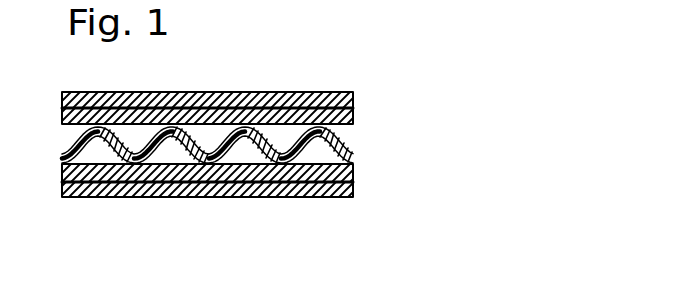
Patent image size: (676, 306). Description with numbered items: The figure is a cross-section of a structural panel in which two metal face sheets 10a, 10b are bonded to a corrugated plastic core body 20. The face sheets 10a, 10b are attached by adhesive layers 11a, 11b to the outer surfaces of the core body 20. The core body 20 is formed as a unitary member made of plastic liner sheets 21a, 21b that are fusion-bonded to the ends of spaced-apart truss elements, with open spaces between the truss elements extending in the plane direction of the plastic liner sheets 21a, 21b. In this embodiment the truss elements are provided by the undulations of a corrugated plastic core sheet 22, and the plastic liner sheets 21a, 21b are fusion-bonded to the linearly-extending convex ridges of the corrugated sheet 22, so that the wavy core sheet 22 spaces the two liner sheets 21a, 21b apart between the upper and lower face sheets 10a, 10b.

The core body 20 is at (46, 110).
The face sheet 10a is at (232, 92).
The face sheet 10b is at (198, 197).
The adhesive layer 11a is at (368, 106).
The adhesive layer 11b is at (368, 192).
The plastic liner sheet 21a is at (368, 127).
The plastic liner sheet 21b is at (368, 173).
The corrugated plastic core sheet 22 is at (362, 142).